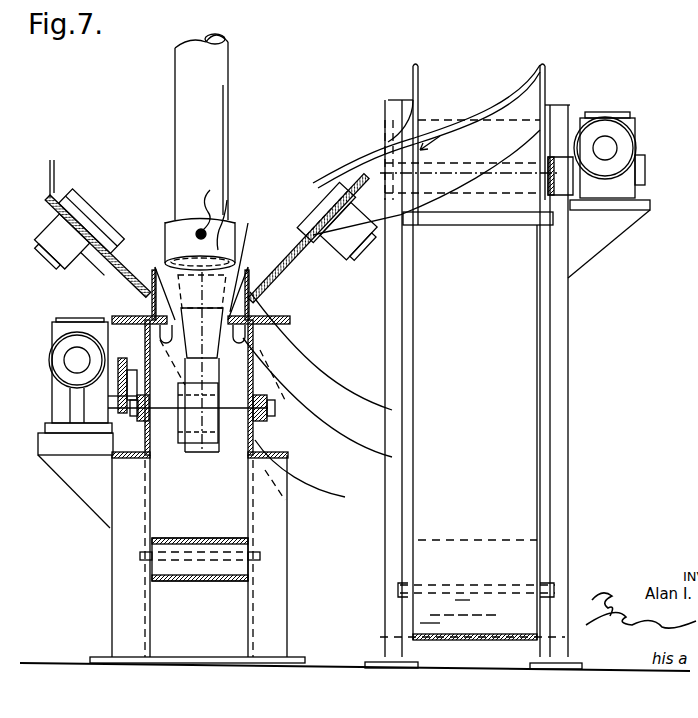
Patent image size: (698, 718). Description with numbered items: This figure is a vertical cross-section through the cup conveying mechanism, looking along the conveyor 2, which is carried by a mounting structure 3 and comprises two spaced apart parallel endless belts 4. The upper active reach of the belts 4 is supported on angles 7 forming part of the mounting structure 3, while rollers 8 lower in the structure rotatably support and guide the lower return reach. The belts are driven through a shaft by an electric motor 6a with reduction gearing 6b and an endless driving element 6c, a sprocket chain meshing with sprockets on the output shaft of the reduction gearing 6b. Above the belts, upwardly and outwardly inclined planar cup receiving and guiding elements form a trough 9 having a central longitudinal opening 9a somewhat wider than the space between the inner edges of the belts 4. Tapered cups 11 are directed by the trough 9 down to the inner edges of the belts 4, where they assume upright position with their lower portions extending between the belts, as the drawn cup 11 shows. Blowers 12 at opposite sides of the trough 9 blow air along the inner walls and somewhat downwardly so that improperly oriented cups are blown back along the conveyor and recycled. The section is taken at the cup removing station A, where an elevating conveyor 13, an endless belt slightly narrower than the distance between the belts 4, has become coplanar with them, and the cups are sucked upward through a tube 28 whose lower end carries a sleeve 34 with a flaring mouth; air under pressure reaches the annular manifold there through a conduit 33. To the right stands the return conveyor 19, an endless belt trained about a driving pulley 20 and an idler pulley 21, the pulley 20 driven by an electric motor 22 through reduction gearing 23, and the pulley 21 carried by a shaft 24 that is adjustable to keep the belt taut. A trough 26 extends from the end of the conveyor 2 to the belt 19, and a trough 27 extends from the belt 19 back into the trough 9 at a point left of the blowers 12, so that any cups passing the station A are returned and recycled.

The conveyor 2 is at (122, 316).
The mounting structure 3 is at (118, 588).
The endless belts 4 is at (156, 314).
The electric motor 6a is at (60, 348).
The reduction gearing 6b is at (60, 324).
The endless driving element 6c is at (122, 398).
The angles 7 is at (160, 338).
The rollers 8 is at (195, 572).
The trough 9 is at (49, 184).
The central longitudinal opening 9a is at (243, 242).
The cups 11 is at (206, 356).
The blowers 12 is at (86, 202).
The elevating conveyor 13 is at (202, 448).
The return conveyor 19 is at (520, 408).
The driving pulley 20 is at (490, 200).
The idler pulley 21 is at (450, 536).
The electric motor 22 is at (619, 134).
The reduction gearing 23 is at (622, 187).
The shaft 24 is at (508, 586).
The trough 26 is at (346, 496).
The trough 27 is at (430, 204).
The tube 28 is at (214, 88).
The conduit 33 is at (209, 188).
The sleeve 34 is at (233, 200).
The cup removing station A is at (186, 243).